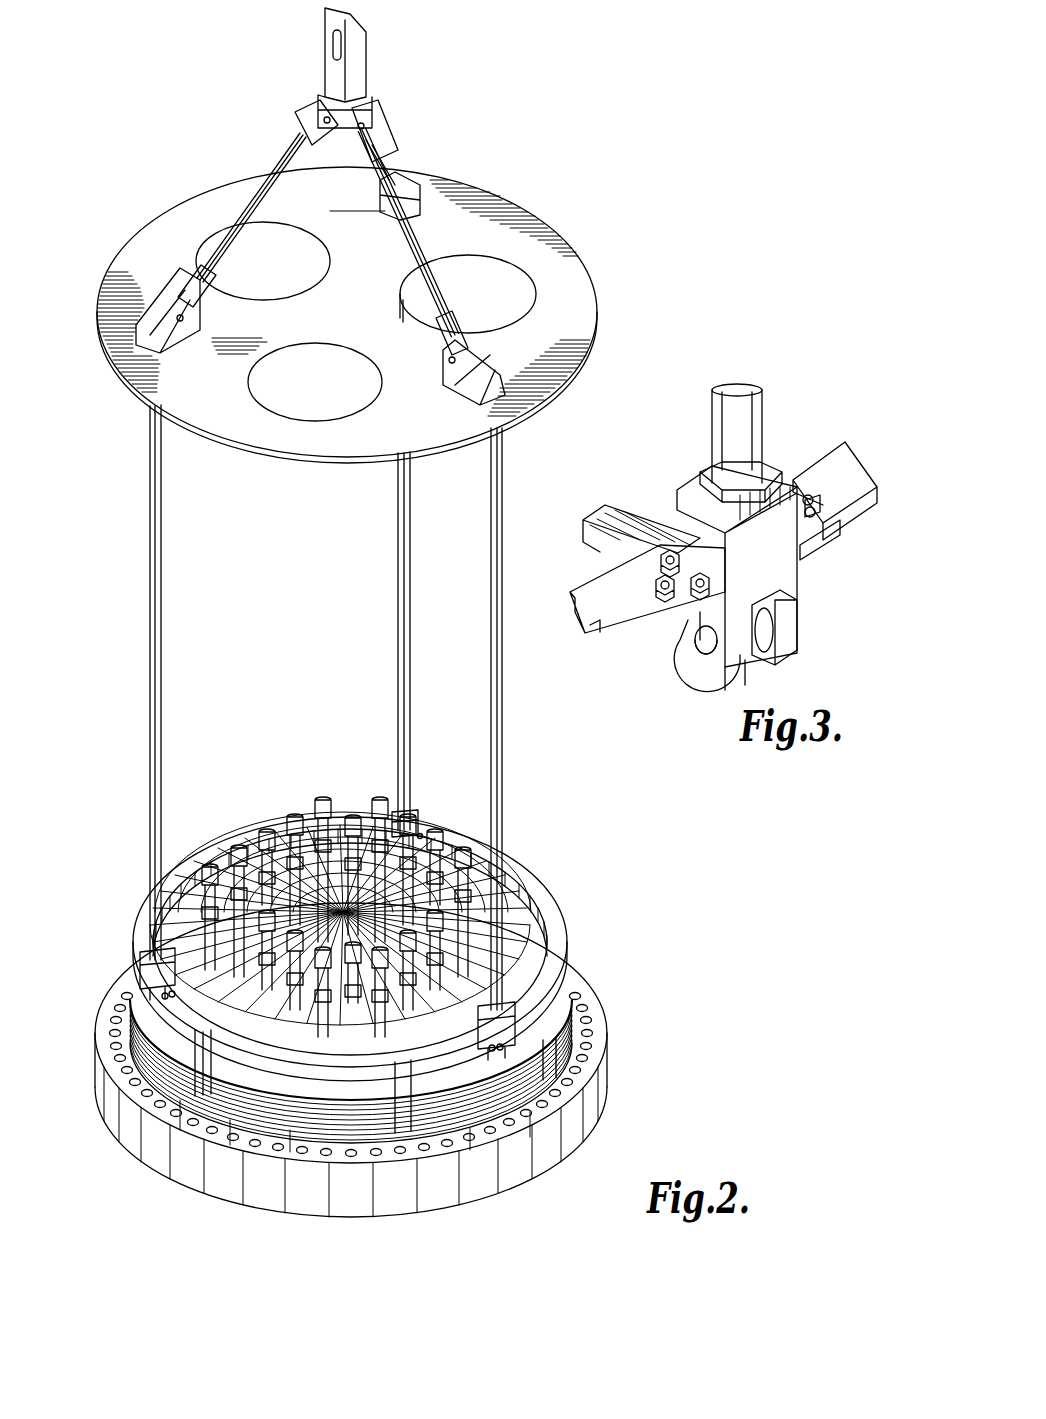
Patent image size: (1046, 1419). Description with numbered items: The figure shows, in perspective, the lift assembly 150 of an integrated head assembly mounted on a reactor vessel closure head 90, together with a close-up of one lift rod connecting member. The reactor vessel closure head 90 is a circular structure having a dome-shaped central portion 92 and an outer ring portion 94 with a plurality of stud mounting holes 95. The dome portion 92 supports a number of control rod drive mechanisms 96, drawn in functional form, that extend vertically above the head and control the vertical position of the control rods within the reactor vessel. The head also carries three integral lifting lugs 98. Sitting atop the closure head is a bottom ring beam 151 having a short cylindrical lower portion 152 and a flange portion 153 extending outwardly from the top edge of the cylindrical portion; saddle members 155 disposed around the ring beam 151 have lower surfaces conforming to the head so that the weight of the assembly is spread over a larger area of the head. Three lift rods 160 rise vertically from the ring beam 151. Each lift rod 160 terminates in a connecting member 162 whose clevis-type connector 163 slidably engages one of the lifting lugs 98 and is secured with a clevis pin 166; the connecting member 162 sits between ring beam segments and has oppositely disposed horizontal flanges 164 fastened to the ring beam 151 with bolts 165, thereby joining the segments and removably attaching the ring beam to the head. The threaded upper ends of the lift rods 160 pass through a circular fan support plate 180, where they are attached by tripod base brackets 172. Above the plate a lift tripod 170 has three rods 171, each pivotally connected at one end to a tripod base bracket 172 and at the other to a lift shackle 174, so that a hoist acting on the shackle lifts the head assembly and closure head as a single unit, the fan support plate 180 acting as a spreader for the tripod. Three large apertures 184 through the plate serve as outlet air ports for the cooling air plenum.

In FIG. 2, the reactor vessel closure head 90 is at (411, 1080).
In FIG. 2, the dome-shaped central portion 92 is at (427, 1033).
In FIG. 2, the outer ring portion 94 is at (550, 1107).
In FIG. 2, the stud mounting holes 95 is at (593, 1016).
In FIG. 2, the control rod drive mechanisms 96 is at (305, 838).
In FIG. 2, the integral lifting lugs 98 is at (185, 968).
In FIG. 3, the integral lifting lugs 98 is at (778, 655).
In FIG. 2, the lift assembly 150 is at (407, 325).
In FIG. 2, the bottom ring beam 151 is at (395, 929).
In FIG. 3, the bottom ring beam 151 is at (850, 468).
In FIG. 2, the cylindrical lower portion 152 is at (298, 1085).
In FIG. 2, the flange portion 153 is at (552, 905).
In FIG. 2, the saddle members 155 is at (210, 1062).
In FIG. 2, the lift rods 160 is at (398, 657).
In FIG. 3, the lift rods 160 is at (750, 422).
In FIG. 2, the connecting member 162 is at (372, 956).
In FIG. 3, the connecting member 162 is at (790, 597).
In FIG. 3, the clevis-type connector 163 is at (692, 676).
In FIG. 3, the horizontal flanges 164 is at (818, 545).
In FIG. 3, the bolts 165 is at (668, 548).
In FIG. 3, the clevis pin 166 is at (702, 645).
In FIG. 2, the lift tripod 170 is at (355, 207).
In FIG. 2, the rods 171 is at (248, 218).
In FIG. 2, the tripod base brackets 172 is at (385, 185).
In FIG. 2, the lift shackle 174 is at (368, 67).
In FIG. 2, the fan support plate 180 is at (592, 305).
In FIG. 2, the apertures 184 is at (240, 262).